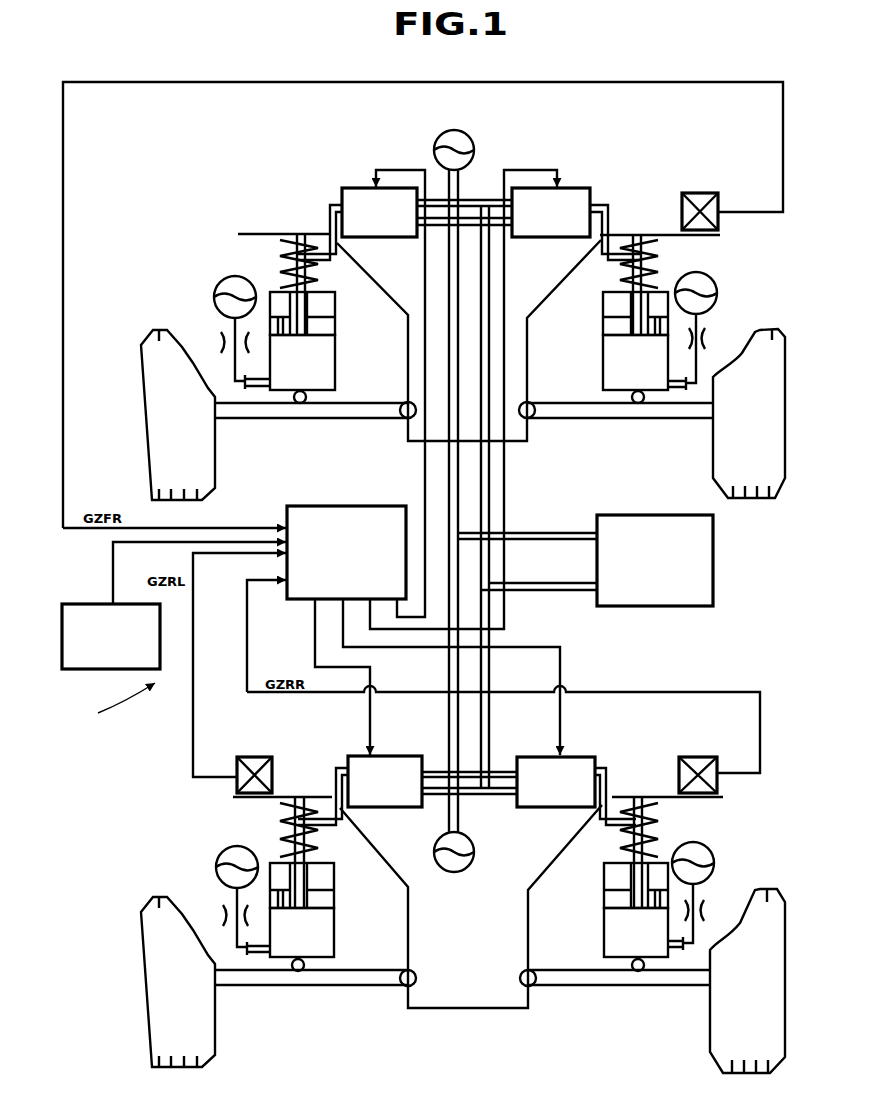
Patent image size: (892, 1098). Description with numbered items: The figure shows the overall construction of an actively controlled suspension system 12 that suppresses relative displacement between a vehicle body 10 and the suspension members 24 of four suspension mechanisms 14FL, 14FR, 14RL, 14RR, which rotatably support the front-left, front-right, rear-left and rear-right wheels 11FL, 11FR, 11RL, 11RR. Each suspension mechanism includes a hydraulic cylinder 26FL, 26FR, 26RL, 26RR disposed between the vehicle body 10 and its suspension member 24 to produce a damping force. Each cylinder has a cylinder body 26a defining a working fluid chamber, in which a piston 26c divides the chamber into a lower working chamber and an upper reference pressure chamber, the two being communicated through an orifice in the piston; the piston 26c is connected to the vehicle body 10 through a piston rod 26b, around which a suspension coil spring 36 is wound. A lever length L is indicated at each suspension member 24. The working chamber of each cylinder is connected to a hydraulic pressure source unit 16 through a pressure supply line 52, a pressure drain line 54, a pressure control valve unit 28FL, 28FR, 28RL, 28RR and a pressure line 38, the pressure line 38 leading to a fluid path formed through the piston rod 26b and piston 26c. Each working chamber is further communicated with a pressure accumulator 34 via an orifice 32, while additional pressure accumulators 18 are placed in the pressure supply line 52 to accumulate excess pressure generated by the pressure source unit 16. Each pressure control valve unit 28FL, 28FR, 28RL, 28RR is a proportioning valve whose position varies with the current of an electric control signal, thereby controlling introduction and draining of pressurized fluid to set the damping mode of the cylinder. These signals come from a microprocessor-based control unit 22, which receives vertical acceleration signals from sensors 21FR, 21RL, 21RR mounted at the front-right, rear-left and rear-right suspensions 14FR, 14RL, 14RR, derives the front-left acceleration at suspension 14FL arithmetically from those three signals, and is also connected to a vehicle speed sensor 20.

The vehicle body 10 is at (522, 445).
The front-left wheel 11FL is at (141, 395).
The front-right wheel 11FR is at (715, 452).
The rear-left wheel 11RL is at (141, 962).
The rear-right wheel 11RR is at (722, 1030).
The active suspension system 12 is at (98, 738).
The front-left suspension mechanism 14FL is at (274, 196).
The front-right suspension mechanism 14FR is at (632, 196).
The rear-left suspension mechanism 14RL is at (313, 787).
The rear-right suspension mechanism 14RR is at (641, 777).
The hydraulic pressure source unit 16 is at (707, 560).
The pressure accumulator 18 is at (467, 142).
The vehicle speed sensor 20 is at (86, 604).
The front-right vertical acceleration sensor 21FR is at (737, 176).
The rear-left vertical acceleration sensor 21RL is at (237, 758).
The rear-right vertical acceleration sensor 21RR is at (716, 749).
The control unit 22 is at (373, 505).
The suspension member 24 is at (276, 420).
The front-left hydraulic cylinder 26FL is at (398, 357).
The front-right hydraulic cylinder 26FR is at (599, 366).
The rear-left hydraulic cylinder 26RL is at (397, 918).
The rear-right hydraulic cylinder 26RR is at (601, 930).
The cylinder body 26a is at (337, 383).
The piston rod 26b is at (312, 305).
The piston 26c is at (290, 326).
The front-left pressure control valve unit 28FL is at (365, 186).
The front-right pressure control valve unit 28FR is at (571, 186).
The rear-left pressure control valve unit 28RL is at (393, 756).
The rear-right pressure control valve unit 28RR is at (528, 756).
The orifice 32 is at (221, 338).
The pressure accumulator 34 is at (214, 290).
The suspension coil spring 36 is at (286, 266).
The pressure line 38 is at (331, 200).
The pressure supply line 52 is at (540, 532).
The pressure drain line 54 is at (552, 573).
The lever arm length L is at (320, 382).